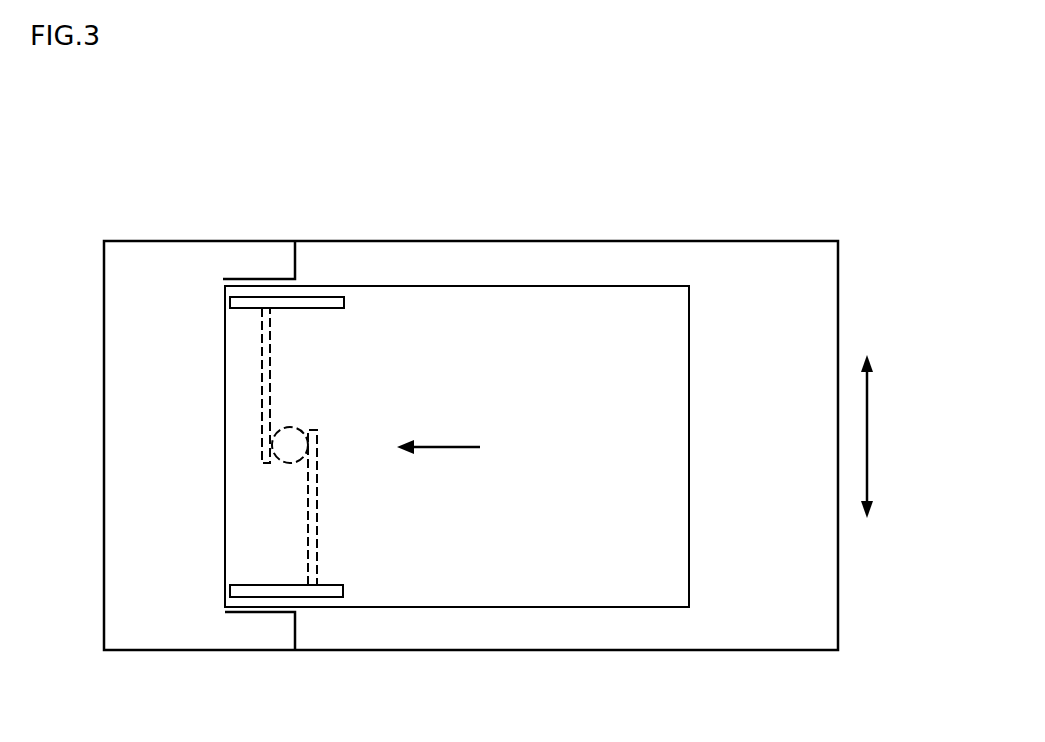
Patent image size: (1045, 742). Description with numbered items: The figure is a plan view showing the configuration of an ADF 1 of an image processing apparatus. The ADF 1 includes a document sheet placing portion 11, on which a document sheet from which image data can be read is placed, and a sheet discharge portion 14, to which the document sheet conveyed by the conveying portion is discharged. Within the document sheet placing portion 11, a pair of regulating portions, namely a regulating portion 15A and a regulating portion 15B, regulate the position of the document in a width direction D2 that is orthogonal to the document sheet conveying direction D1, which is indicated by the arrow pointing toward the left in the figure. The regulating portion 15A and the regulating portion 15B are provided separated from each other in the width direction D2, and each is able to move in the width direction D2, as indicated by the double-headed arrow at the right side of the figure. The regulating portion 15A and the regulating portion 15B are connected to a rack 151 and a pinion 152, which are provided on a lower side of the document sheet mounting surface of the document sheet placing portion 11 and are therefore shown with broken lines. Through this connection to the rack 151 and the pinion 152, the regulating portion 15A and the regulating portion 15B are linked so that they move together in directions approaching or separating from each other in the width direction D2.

The ADF 1 is at (125, 207).
The document sheet placing portion 11 is at (545, 586).
The sheet discharge portion 14 is at (722, 630).
The regulating portion 15A is at (344, 302).
The regulating portion 15B is at (343, 590).
The rack 151 is at (272, 350).
The pinion 152 is at (285, 464).
The document sheet conveying direction D1 is at (448, 446).
The width direction D2 is at (867, 437).